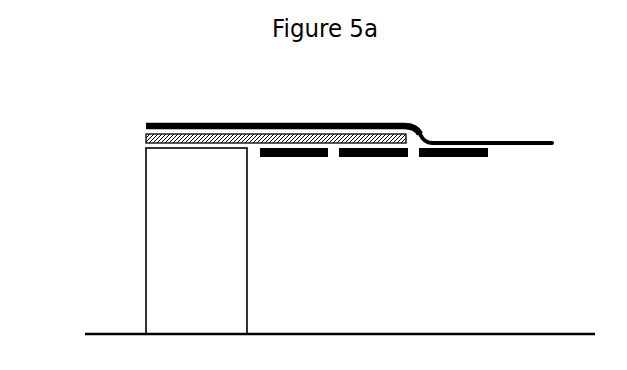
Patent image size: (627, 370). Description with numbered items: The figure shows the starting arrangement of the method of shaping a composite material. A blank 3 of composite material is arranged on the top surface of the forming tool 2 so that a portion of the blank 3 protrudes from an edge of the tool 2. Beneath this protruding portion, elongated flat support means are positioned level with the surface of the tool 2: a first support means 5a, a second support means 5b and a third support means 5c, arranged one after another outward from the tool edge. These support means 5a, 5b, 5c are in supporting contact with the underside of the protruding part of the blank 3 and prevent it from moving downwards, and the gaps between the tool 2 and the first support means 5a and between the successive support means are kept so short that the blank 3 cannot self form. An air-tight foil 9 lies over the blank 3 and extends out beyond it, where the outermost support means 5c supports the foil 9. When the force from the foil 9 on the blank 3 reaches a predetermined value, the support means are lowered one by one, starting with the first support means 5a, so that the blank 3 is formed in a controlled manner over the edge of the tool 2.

The air-tight foil 9 is at (225, 112).
The blank 3 is at (139, 154).
The first support means 5a is at (277, 165).
The second support means 5b is at (372, 165).
The third support means 5c is at (472, 163).
The forming tool 2 is at (133, 295).